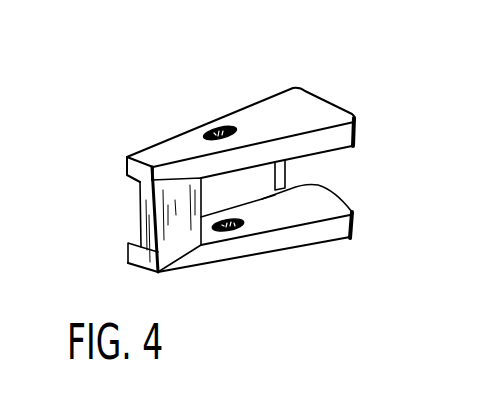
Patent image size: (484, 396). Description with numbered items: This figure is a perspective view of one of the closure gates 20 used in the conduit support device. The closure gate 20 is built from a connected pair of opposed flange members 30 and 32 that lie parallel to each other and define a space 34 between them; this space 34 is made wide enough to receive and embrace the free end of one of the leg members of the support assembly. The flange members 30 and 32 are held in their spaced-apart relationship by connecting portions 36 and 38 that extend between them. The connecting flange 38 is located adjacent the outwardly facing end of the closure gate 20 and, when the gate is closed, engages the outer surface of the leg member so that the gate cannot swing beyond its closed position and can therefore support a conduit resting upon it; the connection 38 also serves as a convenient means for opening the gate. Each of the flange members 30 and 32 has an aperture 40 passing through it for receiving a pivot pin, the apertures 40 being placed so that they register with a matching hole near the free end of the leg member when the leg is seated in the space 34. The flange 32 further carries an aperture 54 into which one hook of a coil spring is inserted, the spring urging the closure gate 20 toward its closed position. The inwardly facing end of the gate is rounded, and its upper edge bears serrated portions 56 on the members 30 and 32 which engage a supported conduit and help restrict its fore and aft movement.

The closure gate 20 is at (320, 64).
The flange member 30 is at (323, 240).
The flange member 32 is at (263, 114).
The space 34 is at (233, 189).
The connecting portion 36 is at (290, 176).
The connecting flange 38 is at (176, 189).
The aperture 40 is at (206, 132).
The aperture 54 is at (281, 104).
The serrated portion 56 is at (357, 122).